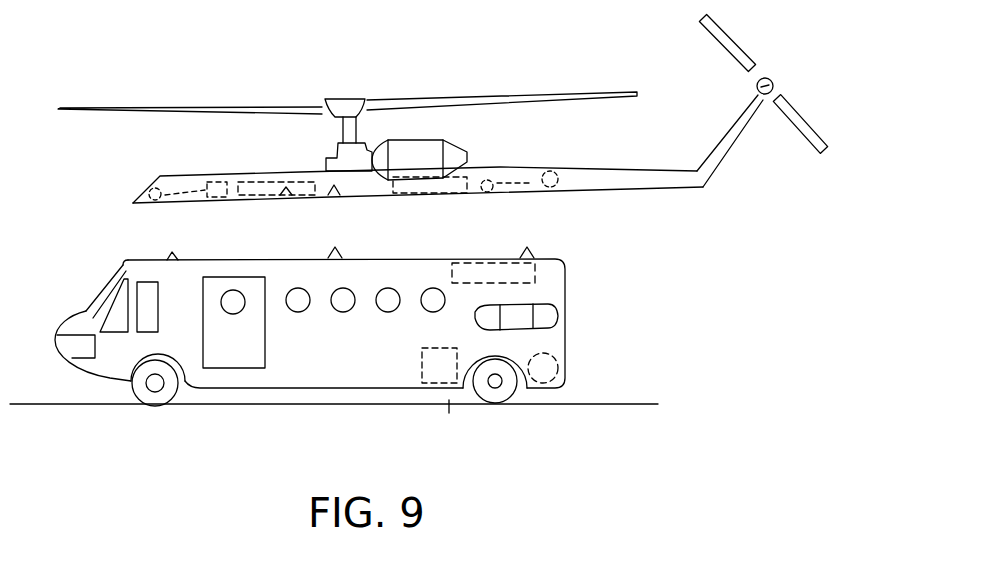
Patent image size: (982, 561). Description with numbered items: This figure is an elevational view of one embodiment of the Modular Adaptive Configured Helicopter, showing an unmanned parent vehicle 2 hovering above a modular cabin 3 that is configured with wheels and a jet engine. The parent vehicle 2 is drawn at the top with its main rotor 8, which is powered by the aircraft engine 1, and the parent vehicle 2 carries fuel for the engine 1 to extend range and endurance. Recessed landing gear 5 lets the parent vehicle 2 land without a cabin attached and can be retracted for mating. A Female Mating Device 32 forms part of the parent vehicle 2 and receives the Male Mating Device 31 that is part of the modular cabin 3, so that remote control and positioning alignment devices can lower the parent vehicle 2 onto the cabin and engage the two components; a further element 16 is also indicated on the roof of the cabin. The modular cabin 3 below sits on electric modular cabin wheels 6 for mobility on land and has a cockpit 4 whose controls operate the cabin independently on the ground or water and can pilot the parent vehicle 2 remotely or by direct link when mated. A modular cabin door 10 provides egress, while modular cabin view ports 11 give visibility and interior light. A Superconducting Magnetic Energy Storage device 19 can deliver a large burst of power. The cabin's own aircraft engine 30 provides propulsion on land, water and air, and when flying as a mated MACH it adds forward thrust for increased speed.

The aircraft engine 1 is at (432, 153).
The parent vehicle 2 is at (185, 181).
The modular cabin 3 is at (547, 291).
The cockpit 4 is at (118, 312).
The landing gear 5 is at (562, 167).
The modular cabin wheel 6 is at (156, 393).
The main rotor 8 is at (277, 105).
The modular cabin door 10 is at (233, 340).
The modular cabin view port 11 is at (298, 300).
The roof module 16 is at (472, 247).
The Superconducting Magnetic Energy Storage (SMES) device 19 is at (457, 422).
The aircraft engine 30 is at (545, 310).
The Male Mating Device (MMD) 31 is at (535, 254).
The Female Mating Device (FMD) 32 is at (173, 203).